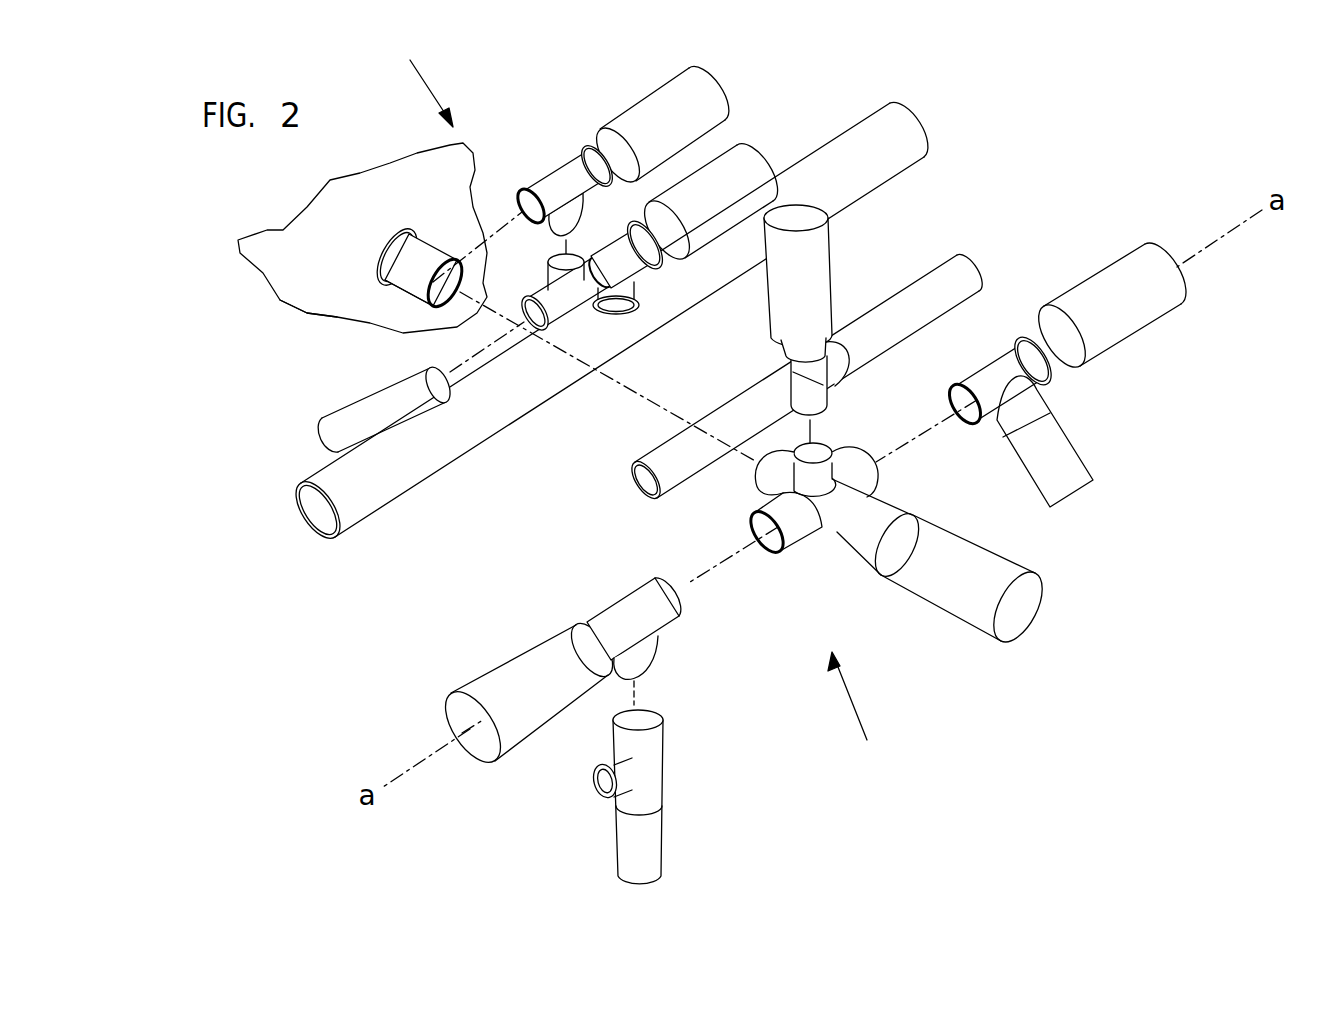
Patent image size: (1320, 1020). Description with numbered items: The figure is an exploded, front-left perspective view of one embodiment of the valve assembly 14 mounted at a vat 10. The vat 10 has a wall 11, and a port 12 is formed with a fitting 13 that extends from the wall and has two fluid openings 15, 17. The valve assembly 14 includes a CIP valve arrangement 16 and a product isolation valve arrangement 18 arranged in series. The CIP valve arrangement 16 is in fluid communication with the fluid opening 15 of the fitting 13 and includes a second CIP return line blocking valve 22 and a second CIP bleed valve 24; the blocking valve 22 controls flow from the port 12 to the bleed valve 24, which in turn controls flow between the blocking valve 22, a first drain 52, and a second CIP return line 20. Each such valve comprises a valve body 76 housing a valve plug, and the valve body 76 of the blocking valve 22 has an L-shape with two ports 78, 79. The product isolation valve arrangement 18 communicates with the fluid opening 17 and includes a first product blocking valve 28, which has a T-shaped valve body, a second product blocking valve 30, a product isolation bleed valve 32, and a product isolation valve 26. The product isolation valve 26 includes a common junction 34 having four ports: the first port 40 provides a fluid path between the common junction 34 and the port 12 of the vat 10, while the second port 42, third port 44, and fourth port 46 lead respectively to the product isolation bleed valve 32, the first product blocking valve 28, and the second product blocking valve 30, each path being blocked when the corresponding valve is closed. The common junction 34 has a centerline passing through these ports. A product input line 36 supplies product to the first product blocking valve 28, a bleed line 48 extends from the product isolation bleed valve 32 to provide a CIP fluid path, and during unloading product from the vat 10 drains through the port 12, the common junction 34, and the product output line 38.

The vat 10 is at (312, 298).
The wall 11 is at (282, 232).
The port 12 is at (407, 232).
The fitting 13 is at (412, 287).
The valve assembly 14 is at (643, 106).
The fluid opening 15 is at (443, 250).
The CIP valve arrangement 16 is at (417, 77).
The fluid opening 17 is at (440, 305).
The product isolation valve arrangement 18 is at (858, 710).
The second CIP return line 20 is at (400, 495).
The second CIP return line blocking valve 22 is at (705, 93).
The second CIP bleed valve 24 is at (733, 172).
The product isolation valve 26 is at (1000, 568).
The first product blocking valve 28 is at (766, 296).
The second product blocking valve 30 is at (1113, 278).
The product isolation bleed valve 32 is at (546, 655).
The common junction 34 is at (800, 535).
The product input line 36 is at (648, 450).
The product output line 38 is at (1053, 489).
The first port 40 is at (765, 481).
The second port 42 is at (767, 555).
The third port 44 is at (820, 448).
The fourth port 46 is at (837, 448).
The bleed line 48 is at (648, 835).
The first drain 52 is at (326, 437).
The valve body 76 is at (567, 170).
The port 78 is at (527, 197).
The port 79 is at (578, 212).